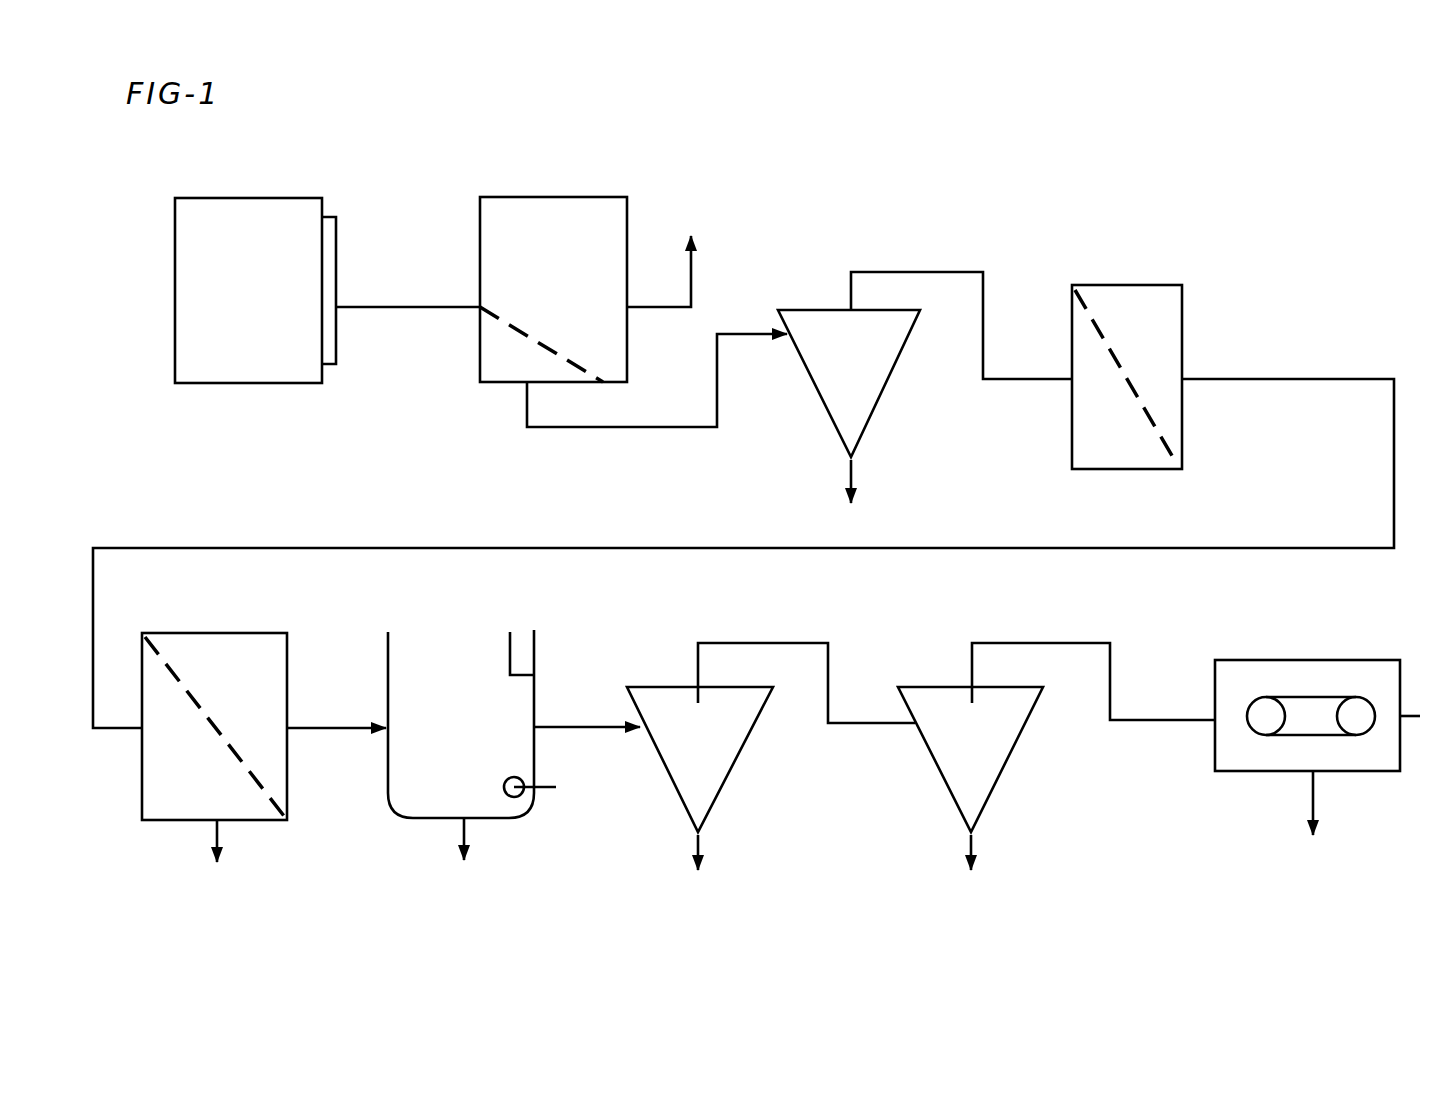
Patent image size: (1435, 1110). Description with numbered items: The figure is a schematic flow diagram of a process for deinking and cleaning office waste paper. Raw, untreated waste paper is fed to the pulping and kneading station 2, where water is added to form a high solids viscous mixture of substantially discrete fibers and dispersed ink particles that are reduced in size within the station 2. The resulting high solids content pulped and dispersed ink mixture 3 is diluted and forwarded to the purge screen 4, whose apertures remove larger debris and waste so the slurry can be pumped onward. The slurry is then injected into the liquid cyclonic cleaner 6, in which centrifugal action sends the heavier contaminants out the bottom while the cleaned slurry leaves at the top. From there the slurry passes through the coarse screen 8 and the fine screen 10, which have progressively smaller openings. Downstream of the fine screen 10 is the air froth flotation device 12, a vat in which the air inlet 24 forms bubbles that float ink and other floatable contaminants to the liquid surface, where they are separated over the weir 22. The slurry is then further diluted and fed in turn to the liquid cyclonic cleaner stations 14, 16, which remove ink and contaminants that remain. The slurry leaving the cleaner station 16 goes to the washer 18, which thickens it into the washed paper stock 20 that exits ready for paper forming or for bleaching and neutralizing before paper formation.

The pulping and kneading station 2 is at (262, 198).
The high solids content pulped and dispersed ink mixture 3 is at (404, 307).
The purge screen 4 is at (586, 197).
The liquid cyclonic cleaner 6 is at (824, 315).
The coarse screen 8 is at (1160, 287).
The fine screen 10 is at (252, 633).
The air froth flotation device 12 is at (456, 665).
The liquid cyclonic cleaner station 14 is at (728, 764).
The liquid cyclonic cleaner station 16 is at (1003, 752).
The washer 18 is at (1337, 660).
The washed paper stock 20 is at (1418, 716).
The weir 22 is at (526, 648).
The air inlet 24 is at (556, 787).